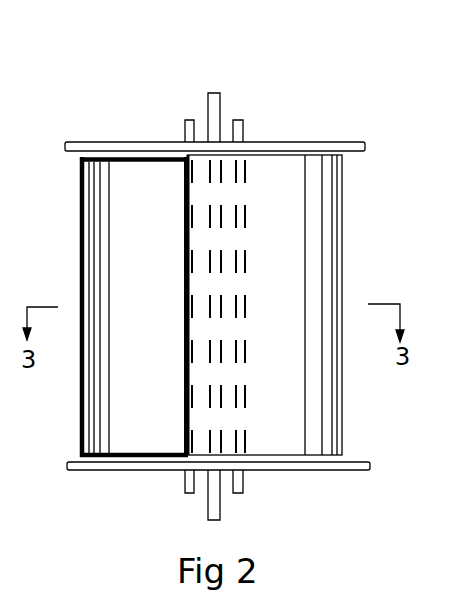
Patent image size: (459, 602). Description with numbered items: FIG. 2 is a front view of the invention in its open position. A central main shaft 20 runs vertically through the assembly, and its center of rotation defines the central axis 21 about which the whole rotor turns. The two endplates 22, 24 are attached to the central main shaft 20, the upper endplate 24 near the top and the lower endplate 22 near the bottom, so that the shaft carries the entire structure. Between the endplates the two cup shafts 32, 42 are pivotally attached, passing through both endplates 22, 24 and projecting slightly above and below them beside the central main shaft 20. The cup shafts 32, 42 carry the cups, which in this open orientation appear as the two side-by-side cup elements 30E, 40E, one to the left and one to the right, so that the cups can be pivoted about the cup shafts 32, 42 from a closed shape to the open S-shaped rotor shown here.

The central main shaft 20 is at (210, 503).
The central axis 21 is at (211, 86).
The endplate 22 is at (67, 467).
The endplate 24 is at (65, 148).
The first electrode/vane element 30E is at (81, 250).
The second electrode/vane element 40E is at (345, 236).
The cup shaft 32 is at (183, 130).
The cup shaft 42 is at (246, 127).